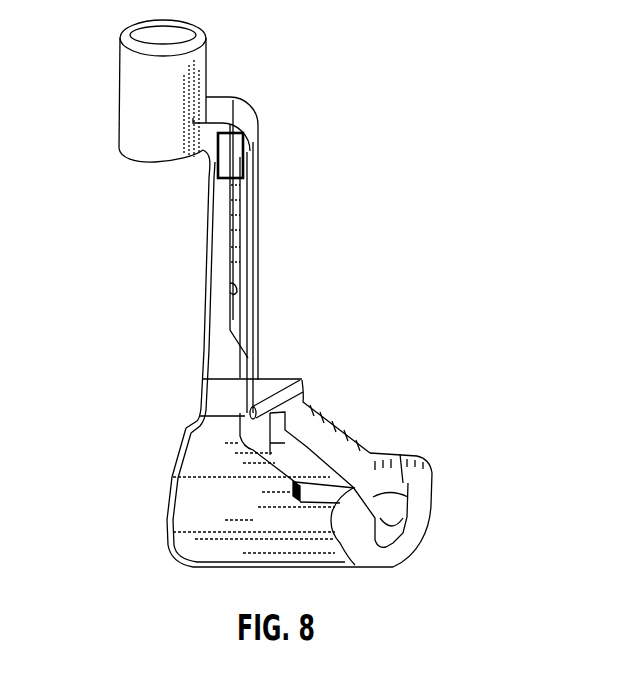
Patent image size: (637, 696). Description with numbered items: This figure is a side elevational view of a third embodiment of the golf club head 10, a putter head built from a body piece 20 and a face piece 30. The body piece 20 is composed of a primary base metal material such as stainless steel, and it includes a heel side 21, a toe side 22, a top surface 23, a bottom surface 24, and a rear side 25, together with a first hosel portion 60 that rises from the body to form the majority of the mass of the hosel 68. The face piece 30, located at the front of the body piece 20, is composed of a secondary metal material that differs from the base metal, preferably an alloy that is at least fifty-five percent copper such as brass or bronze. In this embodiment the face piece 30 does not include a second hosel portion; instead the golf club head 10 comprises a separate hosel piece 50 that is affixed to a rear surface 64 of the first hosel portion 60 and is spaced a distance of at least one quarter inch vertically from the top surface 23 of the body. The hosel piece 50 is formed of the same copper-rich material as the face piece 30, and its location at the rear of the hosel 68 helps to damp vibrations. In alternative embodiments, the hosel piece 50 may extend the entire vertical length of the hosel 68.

The golf club head 10 is at (243, 138).
The body piece 20 is at (412, 481).
The heel side 21 is at (197, 512).
The toe side 22 is at (302, 382).
The top surface 23 is at (277, 385).
The bottom surface 24 is at (236, 568).
The rear side 25 is at (400, 547).
The face piece 30 is at (168, 527).
The hosel piece 50 is at (258, 180).
The first hosel portion 60 is at (210, 203).
The rear surface 64 is at (232, 292).
The hosel 68 is at (122, 158).